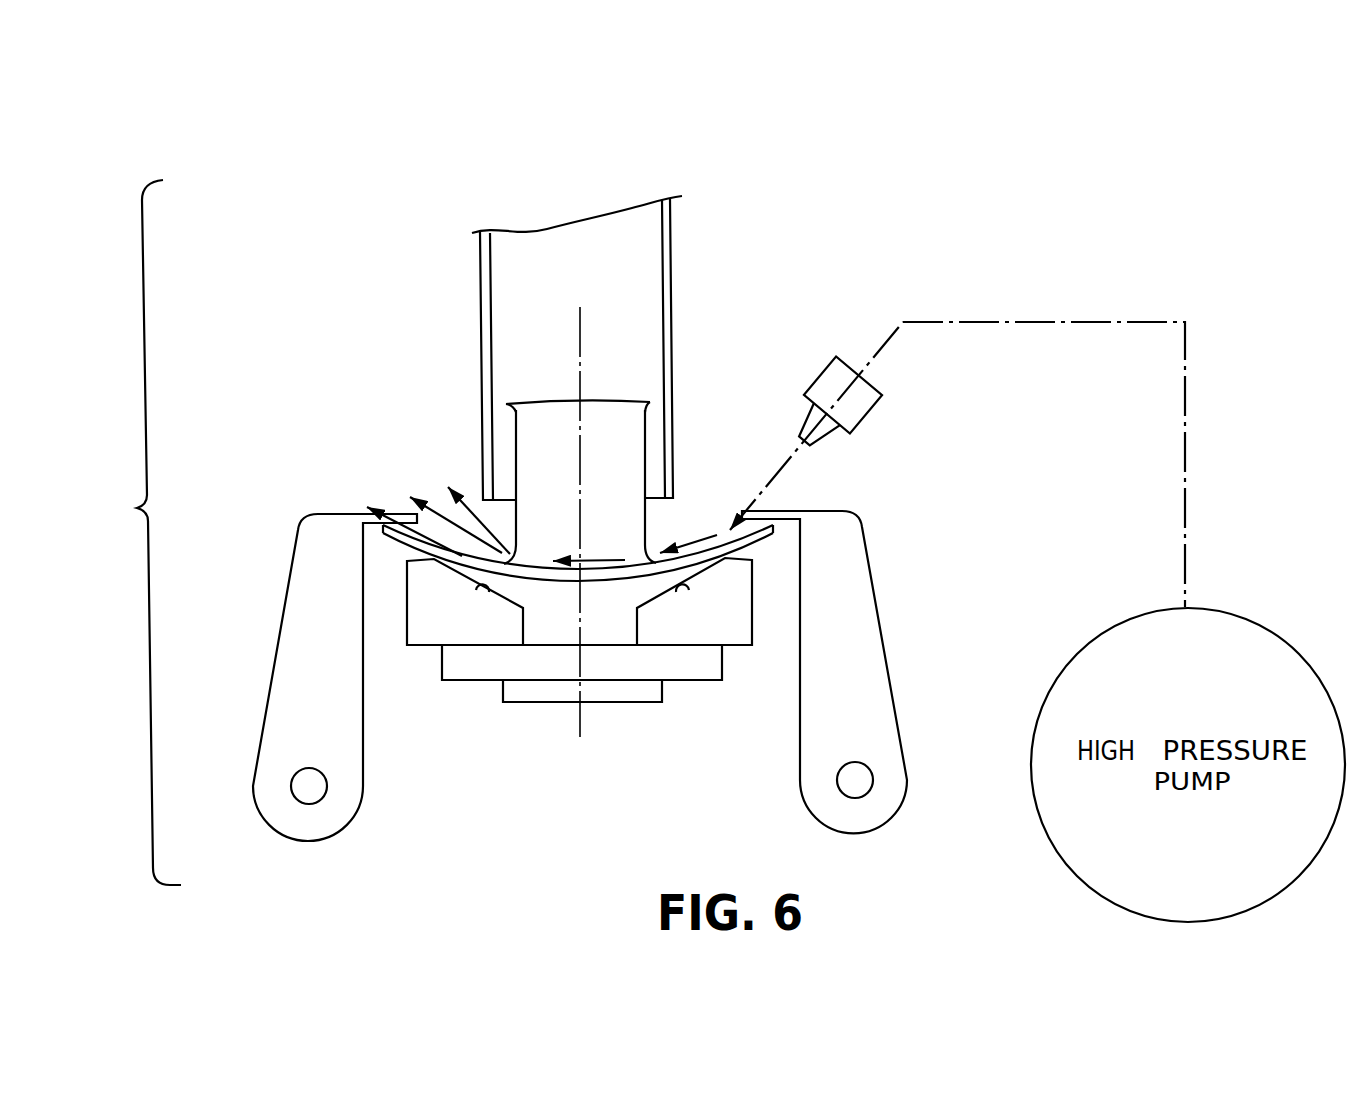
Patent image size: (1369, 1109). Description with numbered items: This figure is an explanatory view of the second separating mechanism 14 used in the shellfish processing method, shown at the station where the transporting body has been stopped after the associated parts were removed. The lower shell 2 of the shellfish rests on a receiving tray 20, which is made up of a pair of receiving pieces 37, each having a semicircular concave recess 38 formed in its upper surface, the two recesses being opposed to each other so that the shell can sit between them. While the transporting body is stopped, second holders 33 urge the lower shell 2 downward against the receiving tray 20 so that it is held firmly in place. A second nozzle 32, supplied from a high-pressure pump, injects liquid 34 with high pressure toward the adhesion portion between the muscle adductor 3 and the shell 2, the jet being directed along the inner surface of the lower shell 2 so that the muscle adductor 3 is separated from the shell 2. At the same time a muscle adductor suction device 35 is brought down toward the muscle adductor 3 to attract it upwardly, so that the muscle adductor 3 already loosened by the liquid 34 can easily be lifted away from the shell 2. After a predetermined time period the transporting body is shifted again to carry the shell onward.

The lower shell 2 is at (547, 581).
The muscle adductor 3 is at (527, 438).
The cleaning unit 14 is at (142, 532).
The receiving tray 20 is at (584, 682).
The second nozzle 32 is at (822, 383).
The second holders 33 is at (283, 618).
The liquid 34 is at (795, 462).
The muscle adductor suction device 35 is at (674, 258).
The receiving pieces 37 is at (408, 620).
The semicircular concave recess 38 is at (483, 592).